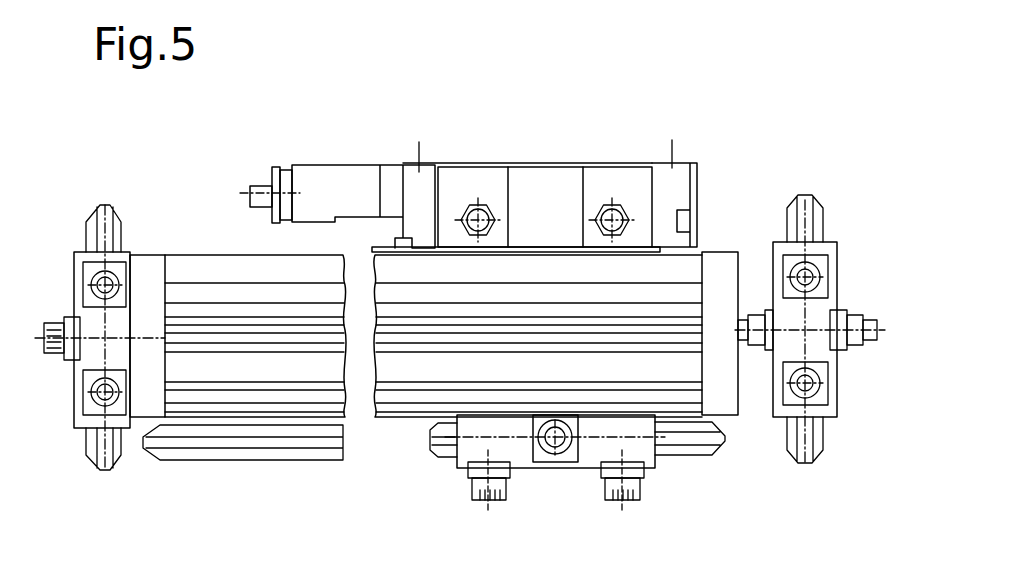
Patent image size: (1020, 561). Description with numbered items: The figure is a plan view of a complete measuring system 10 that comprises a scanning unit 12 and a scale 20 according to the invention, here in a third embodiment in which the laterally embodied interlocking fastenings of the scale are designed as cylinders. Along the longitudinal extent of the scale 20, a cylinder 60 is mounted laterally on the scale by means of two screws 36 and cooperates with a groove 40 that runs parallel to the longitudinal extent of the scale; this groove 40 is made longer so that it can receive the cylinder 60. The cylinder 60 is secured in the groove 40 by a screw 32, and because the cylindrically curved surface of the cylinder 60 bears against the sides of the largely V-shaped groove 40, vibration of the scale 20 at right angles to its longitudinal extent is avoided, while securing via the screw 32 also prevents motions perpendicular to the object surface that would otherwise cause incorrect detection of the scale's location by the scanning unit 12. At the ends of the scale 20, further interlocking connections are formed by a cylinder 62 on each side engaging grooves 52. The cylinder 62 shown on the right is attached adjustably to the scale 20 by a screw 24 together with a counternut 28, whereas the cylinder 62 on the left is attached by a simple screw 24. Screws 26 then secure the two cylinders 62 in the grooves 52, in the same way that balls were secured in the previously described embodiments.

The measuring system 10 is at (699, 141).
The scanning unit 12 is at (540, 188).
The scale 20 is at (237, 267).
The screw 24 is at (57, 350).
The screws 26 is at (95, 285).
The counternut 28 is at (760, 348).
The screw 32 is at (545, 460).
The screws 36 is at (470, 500).
The groove 40 is at (708, 445).
The grooves 52 is at (103, 214).
The cylinder 60 is at (650, 460).
The cylinder 62 is at (78, 256).